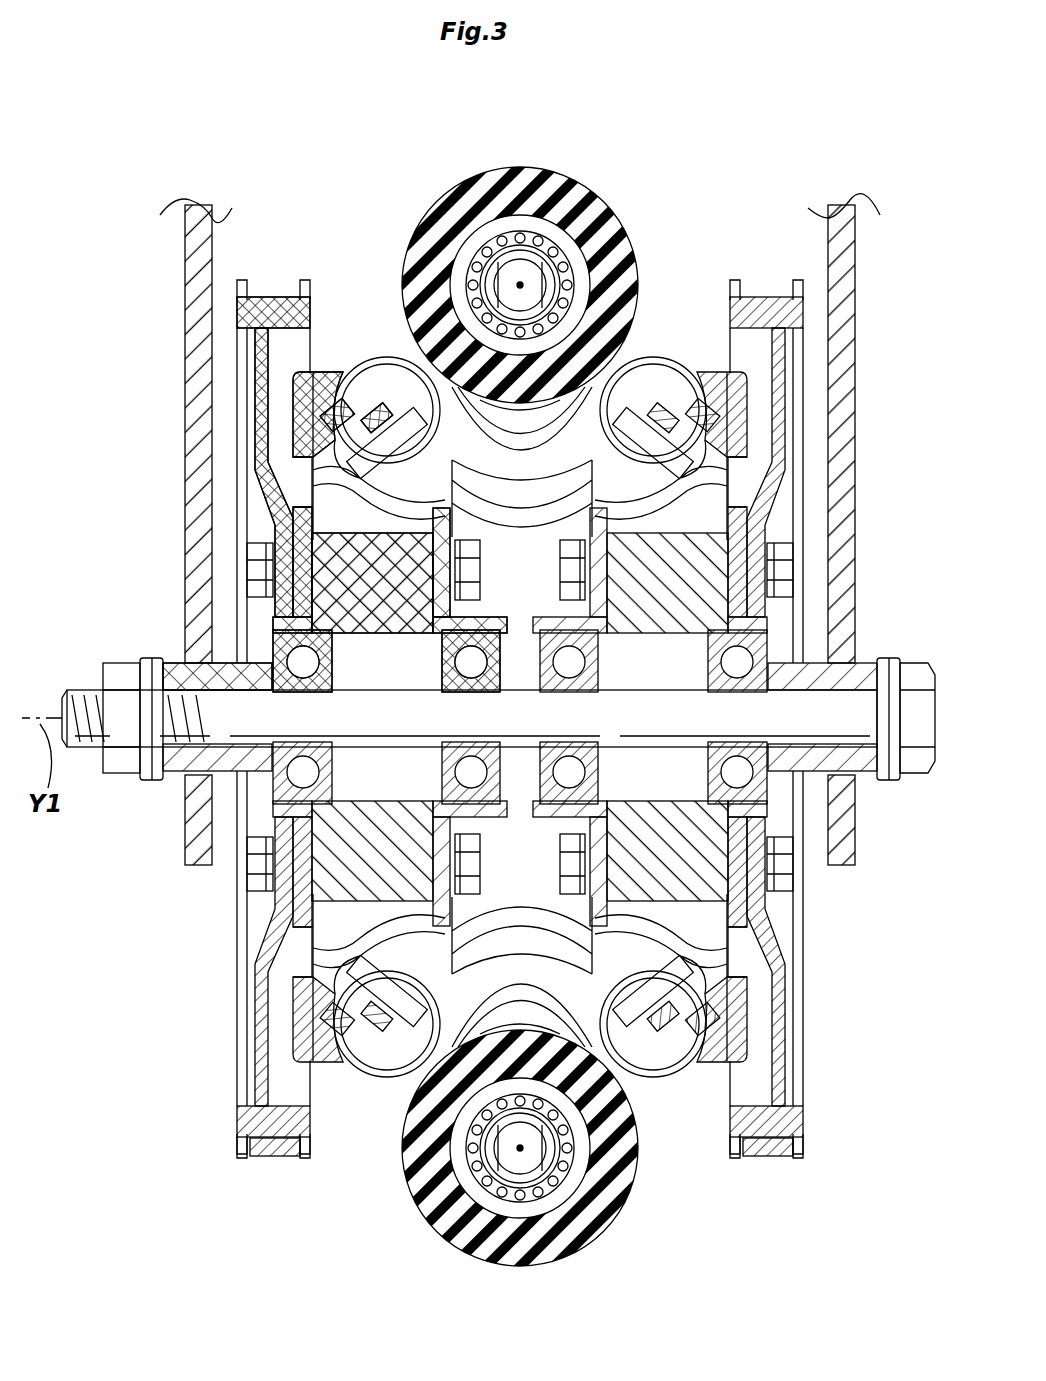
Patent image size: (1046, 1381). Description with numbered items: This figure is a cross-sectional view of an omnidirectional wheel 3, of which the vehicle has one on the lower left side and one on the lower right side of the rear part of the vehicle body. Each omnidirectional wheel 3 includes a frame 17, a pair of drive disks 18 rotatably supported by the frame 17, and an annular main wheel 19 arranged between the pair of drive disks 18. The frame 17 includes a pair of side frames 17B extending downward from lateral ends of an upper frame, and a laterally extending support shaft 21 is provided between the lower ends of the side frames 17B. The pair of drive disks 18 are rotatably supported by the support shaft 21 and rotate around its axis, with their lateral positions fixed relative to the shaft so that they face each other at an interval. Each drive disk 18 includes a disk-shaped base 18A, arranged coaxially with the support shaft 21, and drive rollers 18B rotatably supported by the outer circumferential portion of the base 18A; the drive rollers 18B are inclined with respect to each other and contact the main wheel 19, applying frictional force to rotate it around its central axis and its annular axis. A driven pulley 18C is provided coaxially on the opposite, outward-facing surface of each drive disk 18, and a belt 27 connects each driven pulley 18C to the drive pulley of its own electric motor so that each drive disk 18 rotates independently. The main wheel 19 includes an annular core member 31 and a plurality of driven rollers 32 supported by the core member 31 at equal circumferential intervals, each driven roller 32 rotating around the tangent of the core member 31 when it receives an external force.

The omnidirectional wheel 3 is at (358, 166).
The frame 17 is at (866, 244).
The side frames 17B is at (192, 302).
The drive disks 18 is at (330, 348).
The disk-shaped base 18A is at (724, 565).
The drive rollers 18B is at (650, 365).
The driven pulley 18C is at (238, 1132).
The main wheel 19 is at (495, 670).
The support shaft 21 is at (632, 712).
The belt 27 is at (272, 1158).
The core member 31 is at (523, 280).
The driven rollers 32 is at (432, 236).